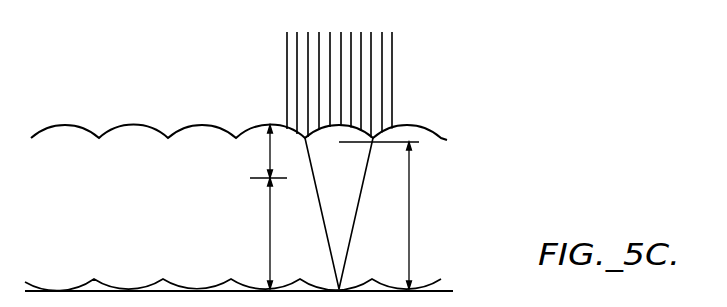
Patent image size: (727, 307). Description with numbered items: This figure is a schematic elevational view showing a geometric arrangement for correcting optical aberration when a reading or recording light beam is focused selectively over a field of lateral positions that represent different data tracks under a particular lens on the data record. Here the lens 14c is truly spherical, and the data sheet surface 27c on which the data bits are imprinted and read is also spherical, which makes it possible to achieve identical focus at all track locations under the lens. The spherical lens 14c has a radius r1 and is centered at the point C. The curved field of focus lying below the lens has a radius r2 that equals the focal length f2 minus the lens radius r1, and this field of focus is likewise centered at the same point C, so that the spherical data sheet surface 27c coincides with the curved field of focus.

The lens 14c is at (358, 130).
The data sheet surface 27c is at (348, 287).
The radius of the spherical lens r1 is at (263, 152).
The radius of the curved field of focus r2 is at (266, 228).
The focal length f2 is at (412, 210).
The center C is at (341, 177).